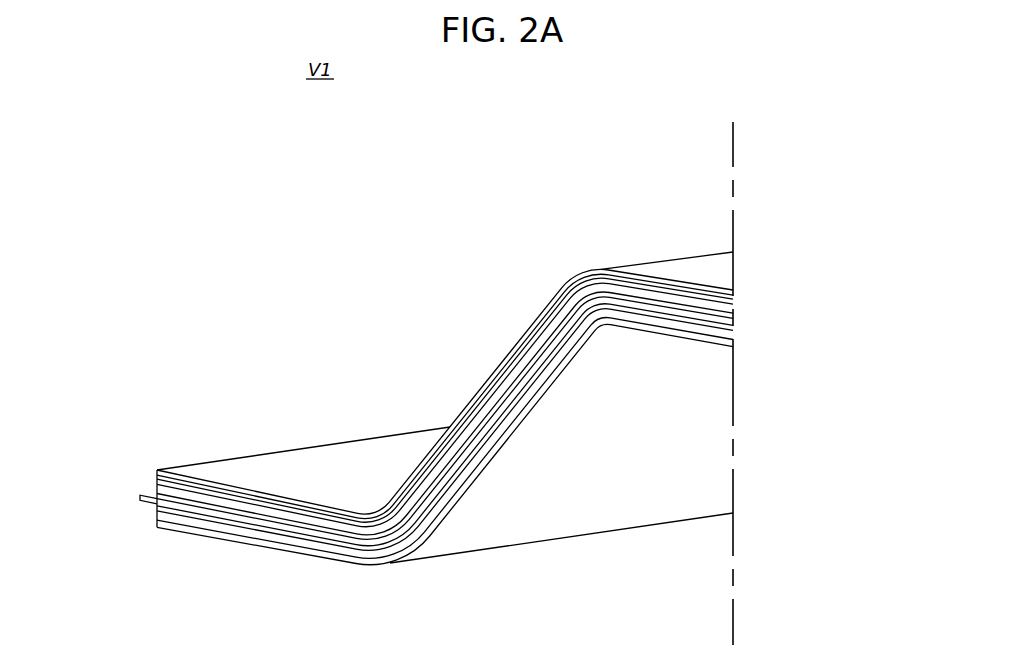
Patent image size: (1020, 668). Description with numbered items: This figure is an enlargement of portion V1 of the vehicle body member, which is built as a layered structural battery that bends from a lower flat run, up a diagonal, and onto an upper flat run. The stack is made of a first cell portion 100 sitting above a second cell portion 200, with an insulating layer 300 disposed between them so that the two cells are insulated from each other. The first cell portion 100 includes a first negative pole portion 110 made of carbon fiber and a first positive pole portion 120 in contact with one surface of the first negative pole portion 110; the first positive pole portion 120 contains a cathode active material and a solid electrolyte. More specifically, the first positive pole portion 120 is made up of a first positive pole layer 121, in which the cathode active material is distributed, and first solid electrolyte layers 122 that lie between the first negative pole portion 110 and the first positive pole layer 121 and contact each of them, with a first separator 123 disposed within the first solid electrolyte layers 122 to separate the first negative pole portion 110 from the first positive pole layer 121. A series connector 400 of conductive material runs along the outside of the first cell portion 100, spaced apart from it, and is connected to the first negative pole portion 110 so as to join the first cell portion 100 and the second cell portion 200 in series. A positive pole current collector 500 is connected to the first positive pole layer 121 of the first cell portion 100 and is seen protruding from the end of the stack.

The first cell portion 100 is at (477, 392).
The first negative pole portion 110 is at (733, 302).
The first positive pole portion 120 is at (520, 410).
The first positive pole layer 121 is at (733, 317).
The first solid electrolyte layers 122 is at (733, 305).
The first separator 123 is at (733, 308).
The second cell portion 200 is at (150, 517).
The insulating layer 300 is at (394, 528).
The series connector 400 is at (276, 465).
The positive pole current collector 500 is at (427, 430).